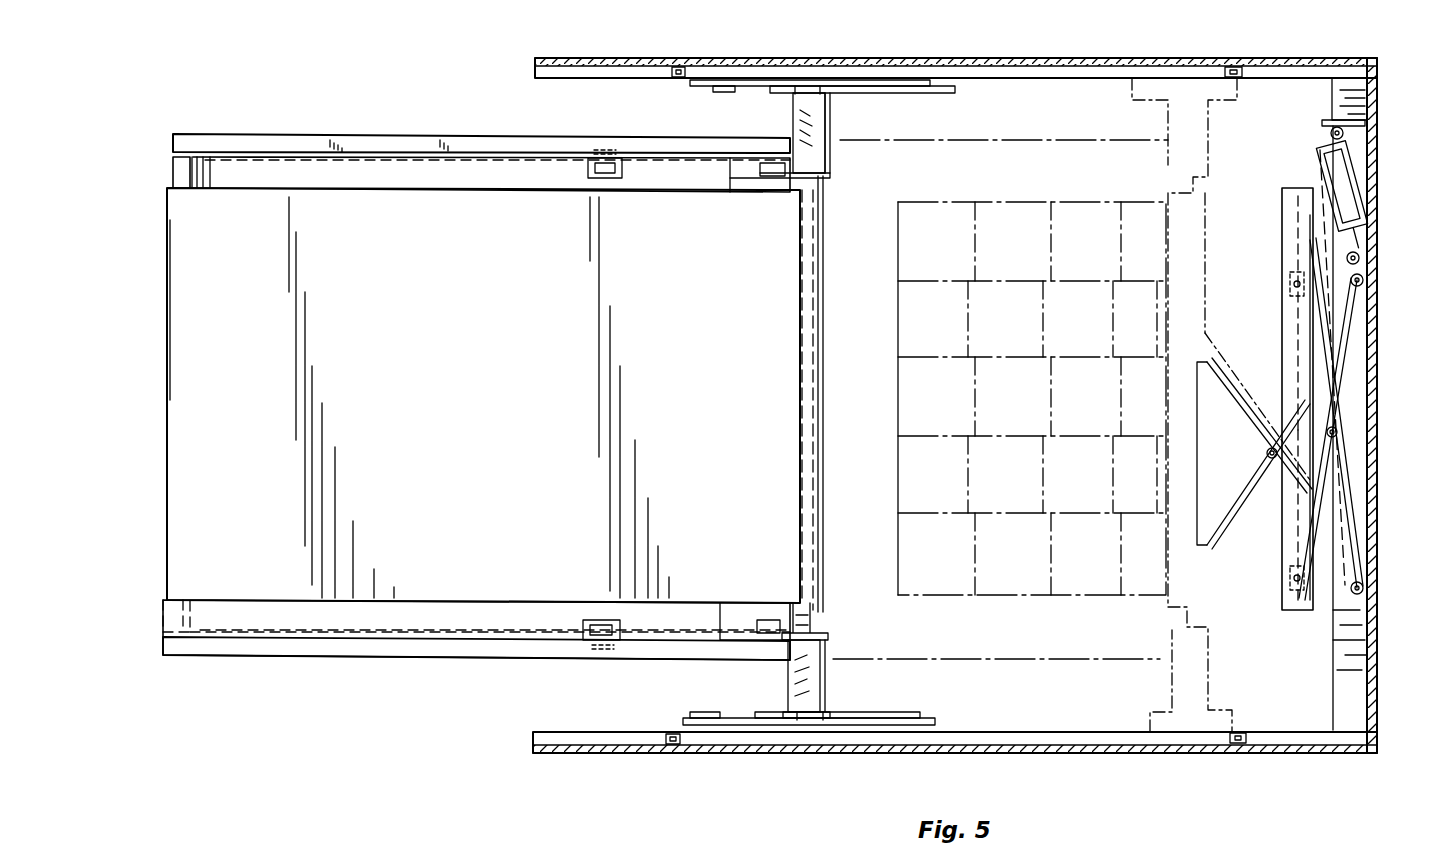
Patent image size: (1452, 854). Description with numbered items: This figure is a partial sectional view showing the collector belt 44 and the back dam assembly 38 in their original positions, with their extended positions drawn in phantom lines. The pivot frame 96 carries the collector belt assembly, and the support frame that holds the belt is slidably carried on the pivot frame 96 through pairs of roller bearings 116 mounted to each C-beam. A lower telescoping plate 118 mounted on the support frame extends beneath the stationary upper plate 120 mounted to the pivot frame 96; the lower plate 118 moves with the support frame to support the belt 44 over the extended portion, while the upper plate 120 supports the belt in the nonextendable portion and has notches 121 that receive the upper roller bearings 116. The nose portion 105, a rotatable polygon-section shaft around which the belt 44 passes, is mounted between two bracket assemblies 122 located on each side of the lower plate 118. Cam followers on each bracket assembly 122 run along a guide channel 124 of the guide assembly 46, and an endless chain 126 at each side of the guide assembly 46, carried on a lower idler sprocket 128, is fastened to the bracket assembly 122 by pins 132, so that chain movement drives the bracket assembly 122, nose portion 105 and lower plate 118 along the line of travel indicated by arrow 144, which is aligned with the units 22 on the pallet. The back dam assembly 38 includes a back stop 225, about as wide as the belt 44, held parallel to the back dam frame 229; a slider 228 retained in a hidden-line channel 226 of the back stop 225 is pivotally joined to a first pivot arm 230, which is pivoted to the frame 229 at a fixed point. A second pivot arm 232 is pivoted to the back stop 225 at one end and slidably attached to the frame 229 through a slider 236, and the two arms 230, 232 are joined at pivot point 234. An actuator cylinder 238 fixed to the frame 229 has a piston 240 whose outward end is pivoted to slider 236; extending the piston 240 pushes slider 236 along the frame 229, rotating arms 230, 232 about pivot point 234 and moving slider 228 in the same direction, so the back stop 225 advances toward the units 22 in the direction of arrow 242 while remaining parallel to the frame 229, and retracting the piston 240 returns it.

The units 22 is at (912, 476).
The back dam assembly 38 is at (1388, 440).
The collector belt 44 is at (503, 410).
The guide assembly 46 is at (1087, 52).
The pivot frame 96 is at (375, 134).
The nose portion 105 is at (826, 240).
The roller bearings 116 is at (606, 167).
The lower telescoping plate 118 is at (780, 620).
The upper plate 120 is at (512, 626).
The notches 121 is at (585, 176).
The bracket assembly 122 is at (795, 114).
The guide channel 124 is at (1036, 47).
The endless chain 126 is at (740, 80).
The lower idler sprocket 128 is at (712, 80).
The pins 132 is at (820, 86).
The arrow 144 is at (1032, 678).
The back stop 225 is at (1282, 193).
The channel 226 is at (1300, 232).
The slider 228 is at (1298, 270).
The back dam frame 229 is at (1350, 610).
The first pivot arm 230 is at (1250, 428).
The second pivot arm 232 is at (1230, 545).
The pivot point 234 is at (1340, 437).
The slider 236 is at (1364, 275).
The actuator cylinder 238 is at (1357, 186).
The piston 240 is at (1359, 240).
The direction arrow 242 is at (1275, 317).